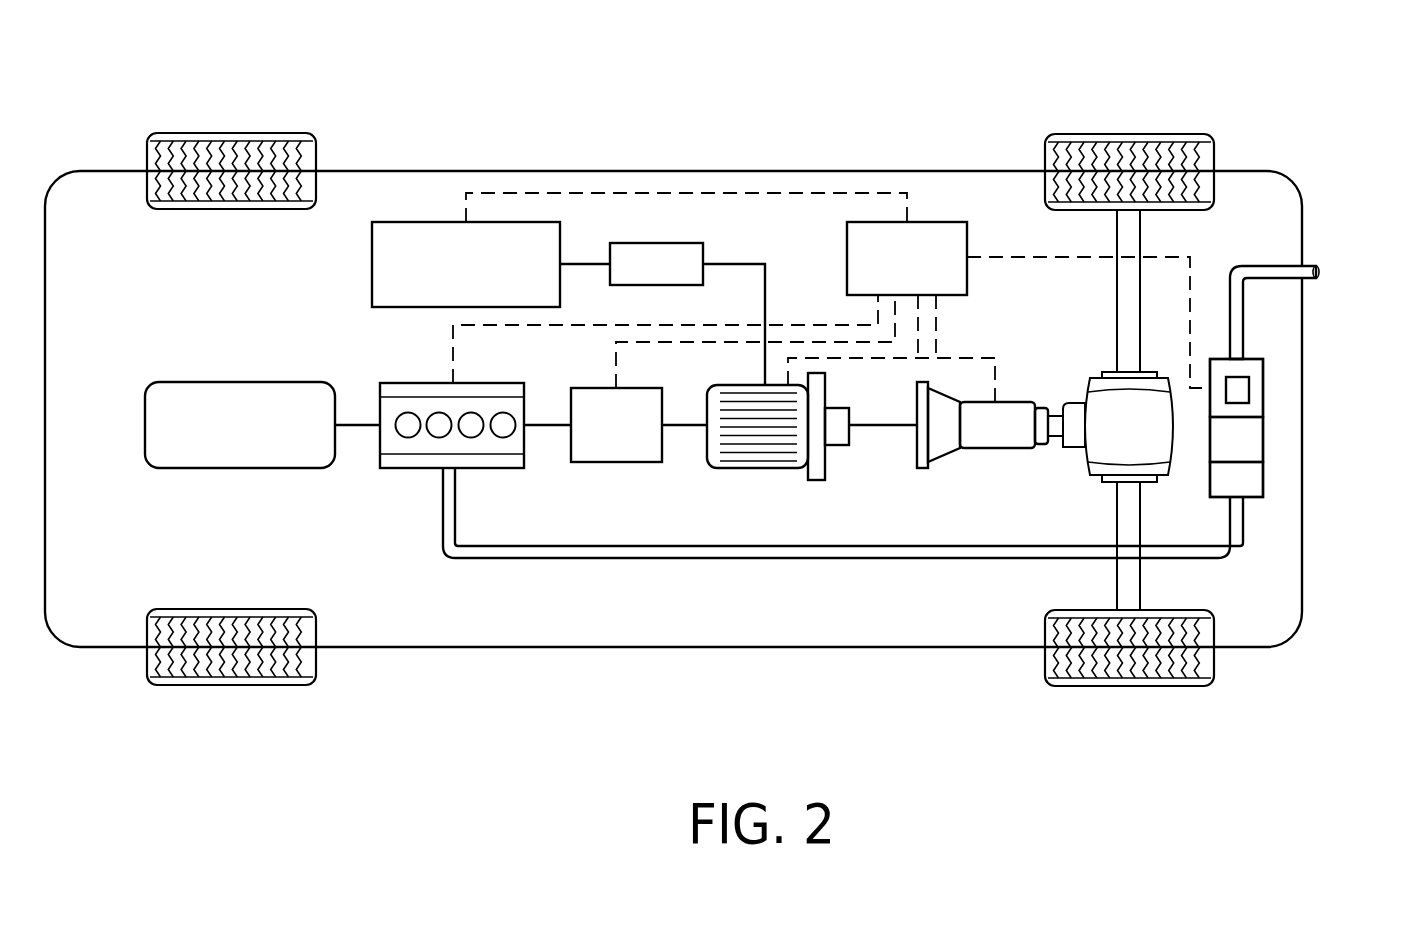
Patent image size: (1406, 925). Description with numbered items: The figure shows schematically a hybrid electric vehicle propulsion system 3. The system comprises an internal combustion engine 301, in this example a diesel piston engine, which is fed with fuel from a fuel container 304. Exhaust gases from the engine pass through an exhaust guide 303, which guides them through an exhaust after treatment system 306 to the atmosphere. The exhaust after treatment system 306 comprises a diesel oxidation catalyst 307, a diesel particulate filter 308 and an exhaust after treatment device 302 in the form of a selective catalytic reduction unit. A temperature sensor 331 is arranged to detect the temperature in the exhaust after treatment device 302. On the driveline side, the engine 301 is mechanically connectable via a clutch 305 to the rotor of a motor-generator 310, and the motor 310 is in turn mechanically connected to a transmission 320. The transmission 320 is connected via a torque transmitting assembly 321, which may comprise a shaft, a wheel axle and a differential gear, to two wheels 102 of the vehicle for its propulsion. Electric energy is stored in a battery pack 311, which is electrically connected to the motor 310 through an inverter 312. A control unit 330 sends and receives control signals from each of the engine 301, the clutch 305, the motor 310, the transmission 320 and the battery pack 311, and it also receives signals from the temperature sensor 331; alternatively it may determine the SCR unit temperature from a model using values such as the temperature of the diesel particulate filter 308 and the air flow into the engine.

The hybrid electric vehicle propulsion system 3 is at (844, 112).
The wheels 102 is at (1130, 134).
The torque transmitting assembly 321 is at (1128, 235).
The battery pack 311 is at (413, 222).
The inverter 312 is at (641, 243).
The control unit 330 is at (936, 222).
The fuel container 304 is at (335, 468).
The internal combustion engine 301 is at (500, 468).
The clutch 305 is at (615, 462).
The motor-generator 310 is at (757, 468).
The transmission 320 is at (995, 448).
The exhaust guide 303 is at (880, 558).
The exhaust after treatment system 306 is at (1302, 451).
The exhaust after treatment device 302 is at (1265, 368).
The temperature sensor 331 is at (1250, 390).
The diesel particulate filter 308 is at (1265, 440).
The diesel oxidation catalyst 307 is at (1265, 478).